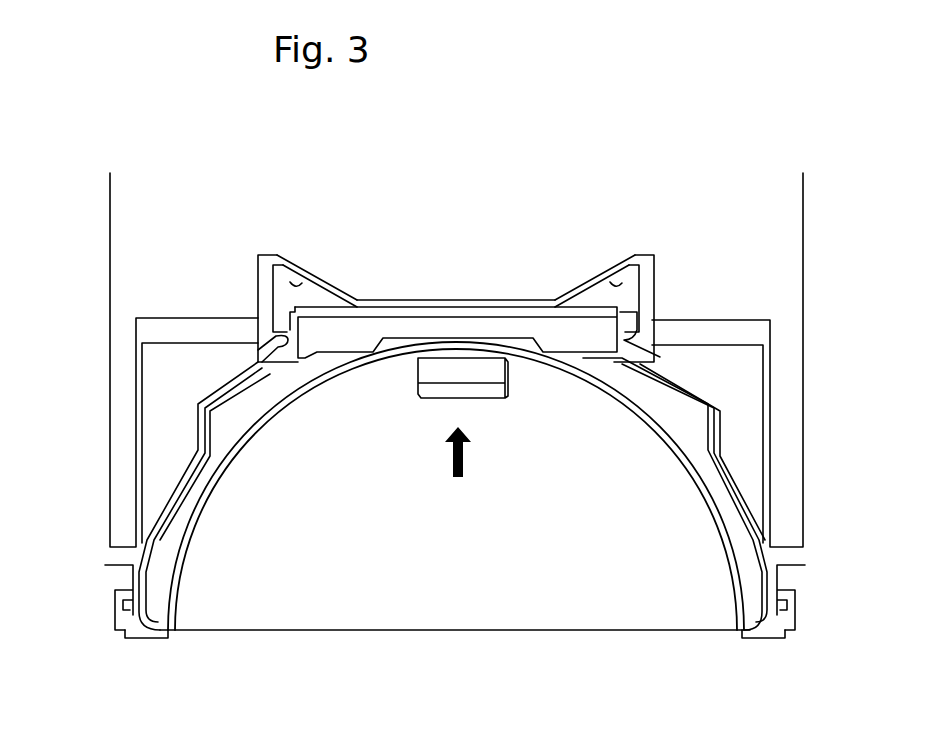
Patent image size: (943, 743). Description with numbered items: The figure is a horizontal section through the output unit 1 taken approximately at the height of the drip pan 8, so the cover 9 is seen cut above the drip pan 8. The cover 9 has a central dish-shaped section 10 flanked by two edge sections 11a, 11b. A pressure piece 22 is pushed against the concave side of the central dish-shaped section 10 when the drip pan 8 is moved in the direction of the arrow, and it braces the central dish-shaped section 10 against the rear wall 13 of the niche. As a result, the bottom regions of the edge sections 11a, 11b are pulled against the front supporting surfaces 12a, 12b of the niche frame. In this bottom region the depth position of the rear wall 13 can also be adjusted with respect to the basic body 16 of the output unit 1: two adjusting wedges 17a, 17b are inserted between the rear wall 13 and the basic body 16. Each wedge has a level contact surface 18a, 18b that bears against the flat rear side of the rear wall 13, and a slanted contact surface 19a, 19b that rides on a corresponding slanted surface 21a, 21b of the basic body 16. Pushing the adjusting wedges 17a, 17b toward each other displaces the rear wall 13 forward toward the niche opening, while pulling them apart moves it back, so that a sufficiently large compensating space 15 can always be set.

The output unit 1 is at (513, 218).
The drip pan 8 is at (693, 438).
The cover 9 is at (703, 497).
The central dish-shaped section 10 is at (598, 385).
The edge section 11a is at (150, 640).
The edge section 11b is at (763, 640).
The front supporting surface 12a is at (130, 622).
The front supporting surface 12b is at (770, 612).
The rear wall 13 is at (362, 330).
The compensating space 15 is at (255, 403).
The basic body 16 is at (447, 298).
The adjusting wedge 17a is at (280, 283).
The adjusting wedge 17b is at (638, 290).
The level contact surface 18a is at (277, 356).
The level contact surface 18b is at (636, 356).
The slanted contact surface 19a is at (297, 275).
The slanted contact surface 19b is at (624, 278).
The slanted surface 21a is at (320, 273).
The slanted surface 21b is at (600, 273).
The pressure piece 22 is at (438, 390).